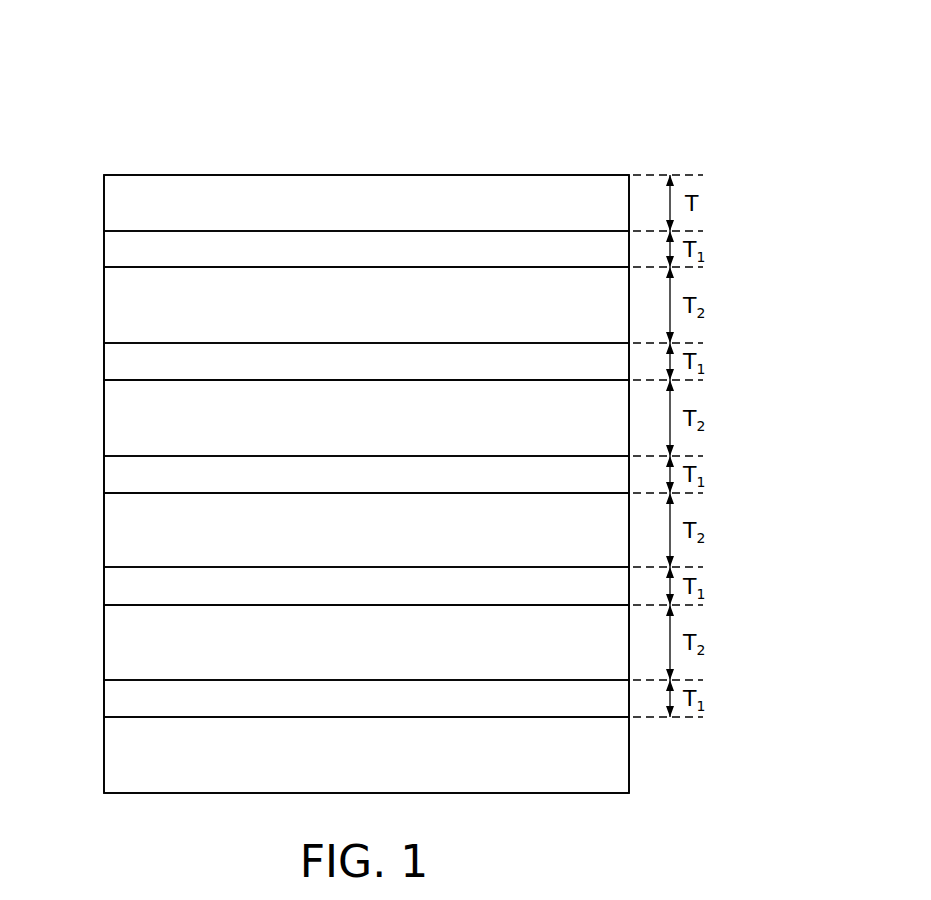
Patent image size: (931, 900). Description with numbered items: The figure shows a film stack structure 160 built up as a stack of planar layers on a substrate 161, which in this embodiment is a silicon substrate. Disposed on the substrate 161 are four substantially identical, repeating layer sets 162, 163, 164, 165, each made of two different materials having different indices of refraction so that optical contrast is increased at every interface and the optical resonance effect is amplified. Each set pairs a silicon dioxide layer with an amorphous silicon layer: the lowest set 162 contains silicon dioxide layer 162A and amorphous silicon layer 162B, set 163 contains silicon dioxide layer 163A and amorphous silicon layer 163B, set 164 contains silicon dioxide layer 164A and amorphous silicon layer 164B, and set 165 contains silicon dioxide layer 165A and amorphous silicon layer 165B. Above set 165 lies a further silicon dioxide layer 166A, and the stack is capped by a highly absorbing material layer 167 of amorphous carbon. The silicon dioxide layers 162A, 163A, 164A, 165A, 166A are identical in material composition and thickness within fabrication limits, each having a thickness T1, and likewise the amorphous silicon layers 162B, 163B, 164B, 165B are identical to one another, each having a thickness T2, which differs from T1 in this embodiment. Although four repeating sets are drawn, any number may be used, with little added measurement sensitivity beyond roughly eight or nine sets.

The film stack structure 160 is at (58, 114).
The substrate 161 is at (104, 755).
The repeating layer set 162 is at (735, 605).
The silicon dioxide layer 162A is at (104, 699).
The amorphous silicon layer 162B is at (104, 643).
The repeating layer set 163 is at (735, 493).
The silicon dioxide layer 163A is at (104, 586).
The amorphous silicon layer 163B is at (104, 529).
The repeating layer set 164 is at (735, 380).
The silicon dioxide layer 164A is at (104, 474).
The amorphous silicon layer 164B is at (104, 419).
The repeating layer set 165 is at (735, 267).
The silicon dioxide layer 165A is at (104, 362).
The amorphous silicon layer 165B is at (104, 305).
The silicon dioxide layer 166A is at (104, 249).
The highly absorbing material layer 167 is at (104, 200).